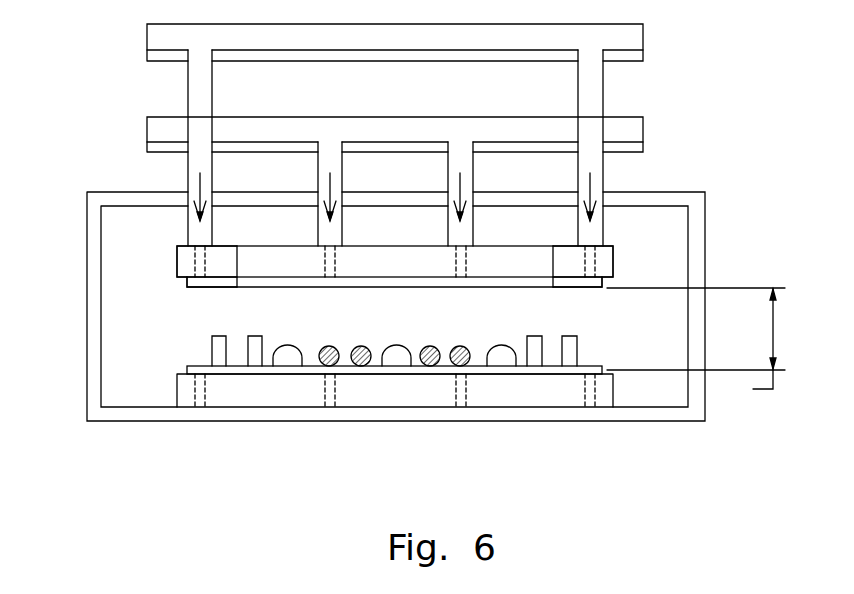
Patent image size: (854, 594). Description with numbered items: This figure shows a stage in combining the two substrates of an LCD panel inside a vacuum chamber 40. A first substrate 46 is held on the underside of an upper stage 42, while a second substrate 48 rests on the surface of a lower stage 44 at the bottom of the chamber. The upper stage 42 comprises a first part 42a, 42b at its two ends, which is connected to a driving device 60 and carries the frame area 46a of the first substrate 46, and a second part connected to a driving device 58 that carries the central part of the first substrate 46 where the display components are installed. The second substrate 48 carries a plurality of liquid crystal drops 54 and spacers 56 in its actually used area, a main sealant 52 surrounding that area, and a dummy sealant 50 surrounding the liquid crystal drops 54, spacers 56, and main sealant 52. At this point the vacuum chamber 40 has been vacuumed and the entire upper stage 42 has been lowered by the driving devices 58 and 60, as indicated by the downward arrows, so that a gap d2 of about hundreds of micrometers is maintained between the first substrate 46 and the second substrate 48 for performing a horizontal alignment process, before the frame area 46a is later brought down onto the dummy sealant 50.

The vacuum chamber 40 is at (698, 229).
The upper stage 42 is at (497, 246).
The first part of upper stage 42a is at (614, 262).
The first part of upper stage 42b is at (177, 260).
The lower stage 44 is at (177, 392).
The first substrate 46 is at (403, 287).
The frame area 46a is at (212, 287).
The second substrate 48 is at (606, 368).
The dummy sealant 50 is at (218, 366).
The main sealant 52 is at (258, 366).
The liquid crystal drops 54 is at (293, 362).
The spacers 56 is at (333, 365).
The driving device 58 is at (643, 131).
The driving device 60 is at (643, 38).
The gap d2 is at (696, 346).